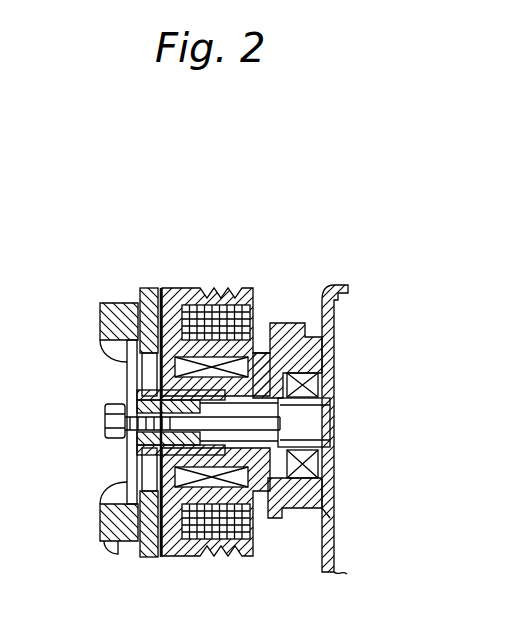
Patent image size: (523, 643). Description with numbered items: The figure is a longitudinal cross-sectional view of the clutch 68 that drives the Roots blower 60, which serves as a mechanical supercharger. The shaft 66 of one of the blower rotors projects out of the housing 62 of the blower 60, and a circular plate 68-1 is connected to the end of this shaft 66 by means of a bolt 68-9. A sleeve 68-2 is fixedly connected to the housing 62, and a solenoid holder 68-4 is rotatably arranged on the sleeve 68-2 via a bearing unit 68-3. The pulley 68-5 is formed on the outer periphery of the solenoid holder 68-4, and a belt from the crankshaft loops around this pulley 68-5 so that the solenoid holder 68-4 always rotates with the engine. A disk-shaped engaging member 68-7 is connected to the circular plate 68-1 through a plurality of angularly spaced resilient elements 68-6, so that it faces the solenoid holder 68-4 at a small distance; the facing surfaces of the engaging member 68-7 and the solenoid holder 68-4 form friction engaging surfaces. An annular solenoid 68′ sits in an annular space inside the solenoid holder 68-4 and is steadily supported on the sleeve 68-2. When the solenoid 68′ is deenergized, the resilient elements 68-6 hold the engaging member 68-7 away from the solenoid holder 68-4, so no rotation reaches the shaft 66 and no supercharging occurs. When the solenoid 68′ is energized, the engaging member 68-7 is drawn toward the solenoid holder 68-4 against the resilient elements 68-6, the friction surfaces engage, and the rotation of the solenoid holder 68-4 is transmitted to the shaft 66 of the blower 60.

The Roots blower 60 is at (372, 348).
The housing 62 is at (347, 282).
The shaft 66 is at (310, 420).
The clutch 68 is at (255, 280).
The annular solenoid 68′ is at (236, 557).
The circular plate 68-1 is at (127, 370).
The sleeve 68-2 is at (258, 380).
The bearing unit 68-3 is at (300, 492).
The solenoid holder 68-4 is at (177, 288).
The pulley 68-5 is at (210, 290).
The resilient elements 68-6 is at (118, 547).
The engaging member 68-7 is at (150, 288).
The bolt 68-9 is at (105, 428).